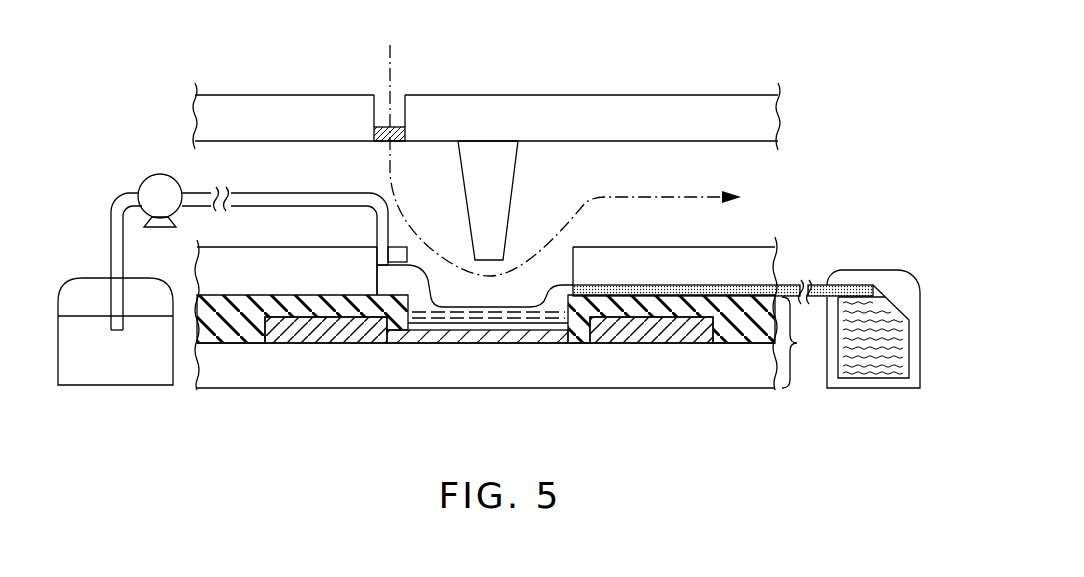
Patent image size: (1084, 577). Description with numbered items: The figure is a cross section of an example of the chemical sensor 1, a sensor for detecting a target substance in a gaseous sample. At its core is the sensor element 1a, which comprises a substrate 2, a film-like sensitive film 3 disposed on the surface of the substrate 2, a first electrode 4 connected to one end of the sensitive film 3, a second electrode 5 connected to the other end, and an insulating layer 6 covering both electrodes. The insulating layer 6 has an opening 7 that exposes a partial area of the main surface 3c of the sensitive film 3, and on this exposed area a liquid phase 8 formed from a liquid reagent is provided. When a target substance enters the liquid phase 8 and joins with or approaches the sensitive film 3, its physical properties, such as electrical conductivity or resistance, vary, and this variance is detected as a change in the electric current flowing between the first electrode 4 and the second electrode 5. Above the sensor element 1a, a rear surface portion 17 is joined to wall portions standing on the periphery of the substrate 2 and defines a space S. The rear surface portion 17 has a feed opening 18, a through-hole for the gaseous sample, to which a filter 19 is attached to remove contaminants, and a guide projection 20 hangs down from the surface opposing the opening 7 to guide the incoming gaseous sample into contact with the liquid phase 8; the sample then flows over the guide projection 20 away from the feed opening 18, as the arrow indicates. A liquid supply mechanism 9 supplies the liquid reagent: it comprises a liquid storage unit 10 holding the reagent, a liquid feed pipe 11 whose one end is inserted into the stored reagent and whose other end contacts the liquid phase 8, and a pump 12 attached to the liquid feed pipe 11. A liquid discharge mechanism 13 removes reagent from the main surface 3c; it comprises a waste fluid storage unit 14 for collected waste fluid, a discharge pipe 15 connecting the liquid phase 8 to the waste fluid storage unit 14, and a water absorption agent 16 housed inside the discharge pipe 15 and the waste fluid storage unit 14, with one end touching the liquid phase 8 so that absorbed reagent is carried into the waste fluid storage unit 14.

The chemical sensor 1 is at (226, 62).
The sensor element 1a is at (803, 342).
The substrate 2 is at (248, 368).
The sensitive film 3 is at (555, 337).
The main surface 3c is at (457, 330).
The first electrode 4 is at (317, 337).
The second electrode 5 is at (645, 340).
The insulating layer 6 is at (733, 340).
The opening 7 is at (422, 323).
The liquid phase 8 is at (554, 312).
The liquid supply mechanism 9 is at (97, 228).
The liquid storage unit 10 is at (118, 367).
The liquid feed pipe 11 is at (127, 200).
The pump 12 is at (160, 180).
The liquid discharge mechanism 13 is at (892, 252).
The waste fluid storage unit 14 is at (863, 280).
The discharge pipe 15 is at (819, 284).
The water absorption agent 16 is at (867, 370).
The rear surface portion 17 is at (553, 105).
The feed opening 18 is at (383, 100).
The filter 19 is at (386, 141).
The guide projection 20 is at (501, 189).
The space S is at (700, 180).